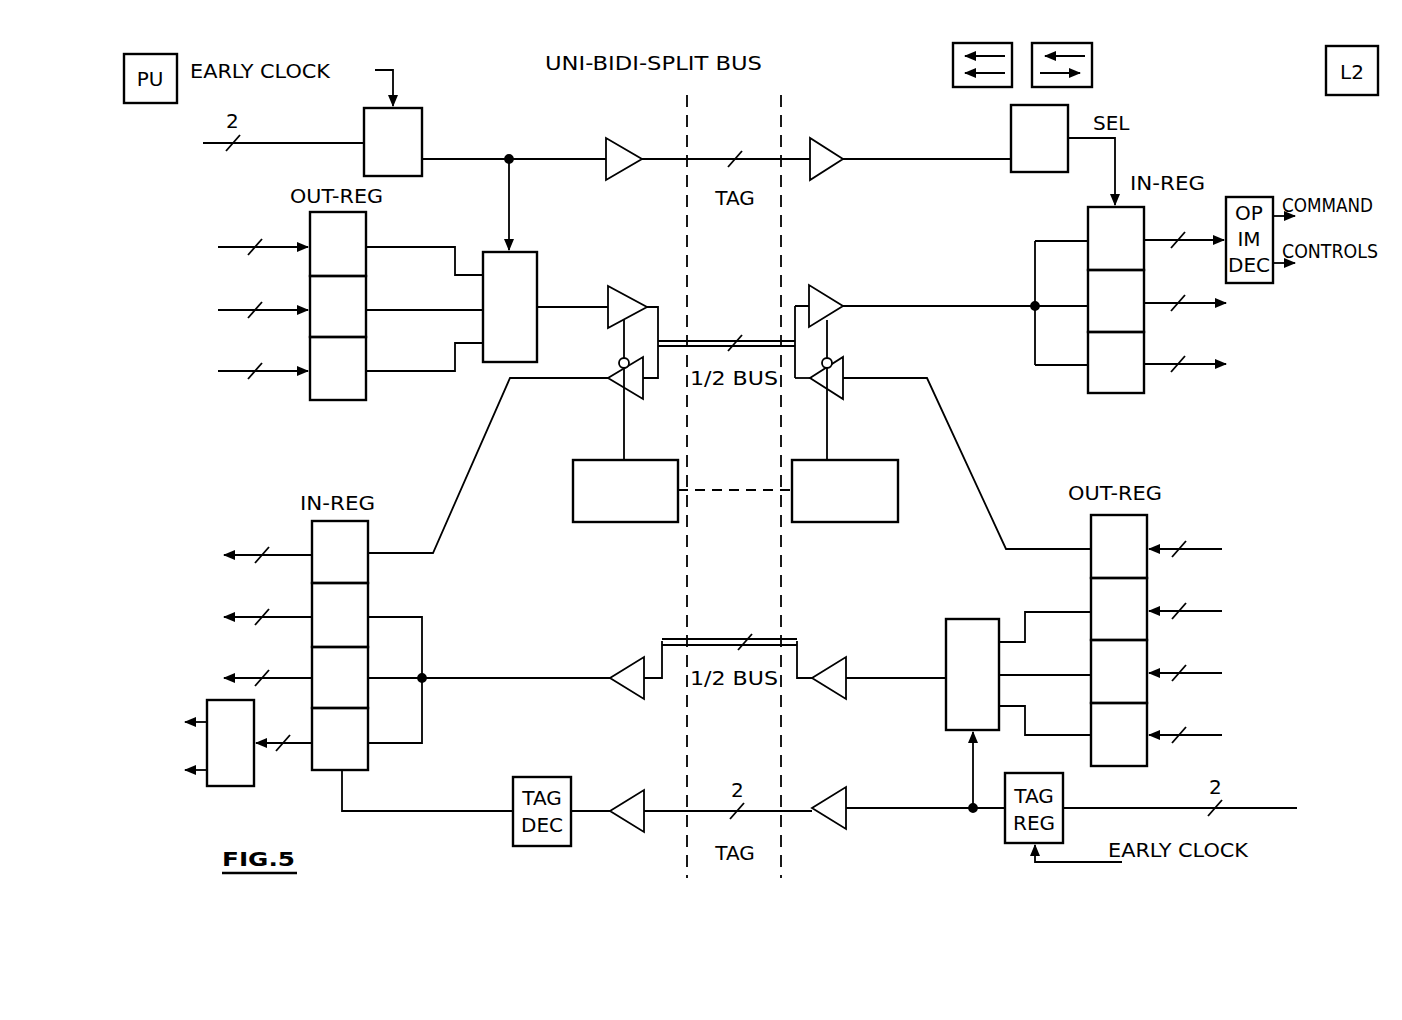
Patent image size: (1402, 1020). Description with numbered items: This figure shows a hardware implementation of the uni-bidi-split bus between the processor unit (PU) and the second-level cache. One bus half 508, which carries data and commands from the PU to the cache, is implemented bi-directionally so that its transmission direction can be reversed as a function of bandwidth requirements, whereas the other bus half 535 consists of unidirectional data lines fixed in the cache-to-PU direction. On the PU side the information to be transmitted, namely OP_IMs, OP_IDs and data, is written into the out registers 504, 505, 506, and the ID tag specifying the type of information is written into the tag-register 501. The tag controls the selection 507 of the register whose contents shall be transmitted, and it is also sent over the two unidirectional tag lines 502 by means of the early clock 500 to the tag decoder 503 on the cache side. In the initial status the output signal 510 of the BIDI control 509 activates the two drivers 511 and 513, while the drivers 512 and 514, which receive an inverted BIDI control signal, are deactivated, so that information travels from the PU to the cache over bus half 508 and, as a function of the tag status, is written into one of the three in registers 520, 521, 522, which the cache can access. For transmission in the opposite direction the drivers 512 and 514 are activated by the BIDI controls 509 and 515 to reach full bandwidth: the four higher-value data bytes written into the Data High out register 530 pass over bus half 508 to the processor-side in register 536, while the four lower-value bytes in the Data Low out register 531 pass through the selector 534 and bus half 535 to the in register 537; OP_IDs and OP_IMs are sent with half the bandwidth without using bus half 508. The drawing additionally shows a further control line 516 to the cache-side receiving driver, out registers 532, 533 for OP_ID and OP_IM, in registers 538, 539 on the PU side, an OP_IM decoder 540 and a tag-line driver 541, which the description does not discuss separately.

The early clock 500 is at (363, 82).
The tag-register 501 is at (422, 128).
The unidirectional tag lines 502 is at (745, 158).
The tag decoder 503 is at (1011, 132).
The out register 504 is at (366, 232).
The out register 505 is at (366, 294).
The out register 506 is at (366, 356).
The selection 507 is at (537, 262).
The bus half 508 is at (722, 340).
The BIDI control 509 is at (620, 460).
The output signal 510 is at (624, 345).
The driver 511 is at (625, 290).
The driver 512 is at (622, 392).
The driver 513 is at (832, 298).
The driver 514 is at (830, 396).
The BIDI control 515 is at (850, 460).
The enable line 516 is at (827, 343).
The in register 520 is at (1088, 224).
The in register 521 is at (1088, 288).
The in register 522 is at (1088, 352).
The Data High out register 530 is at (1091, 535).
The Data Low out register 531 is at (1093, 628).
The OP ID output register 532 is at (1093, 690).
The OP IM output register 533 is at (1110, 766).
The selector 534 is at (972, 619).
The bus half 535 is at (752, 638).
The in register 536 is at (368, 546).
The in register 537 is at (368, 601).
The OP ID input register 538 is at (370, 667).
The OP IM input register 539 is at (368, 762).
The OP IM decoder 540 is at (228, 786).
The receiver 541 is at (800, 806).